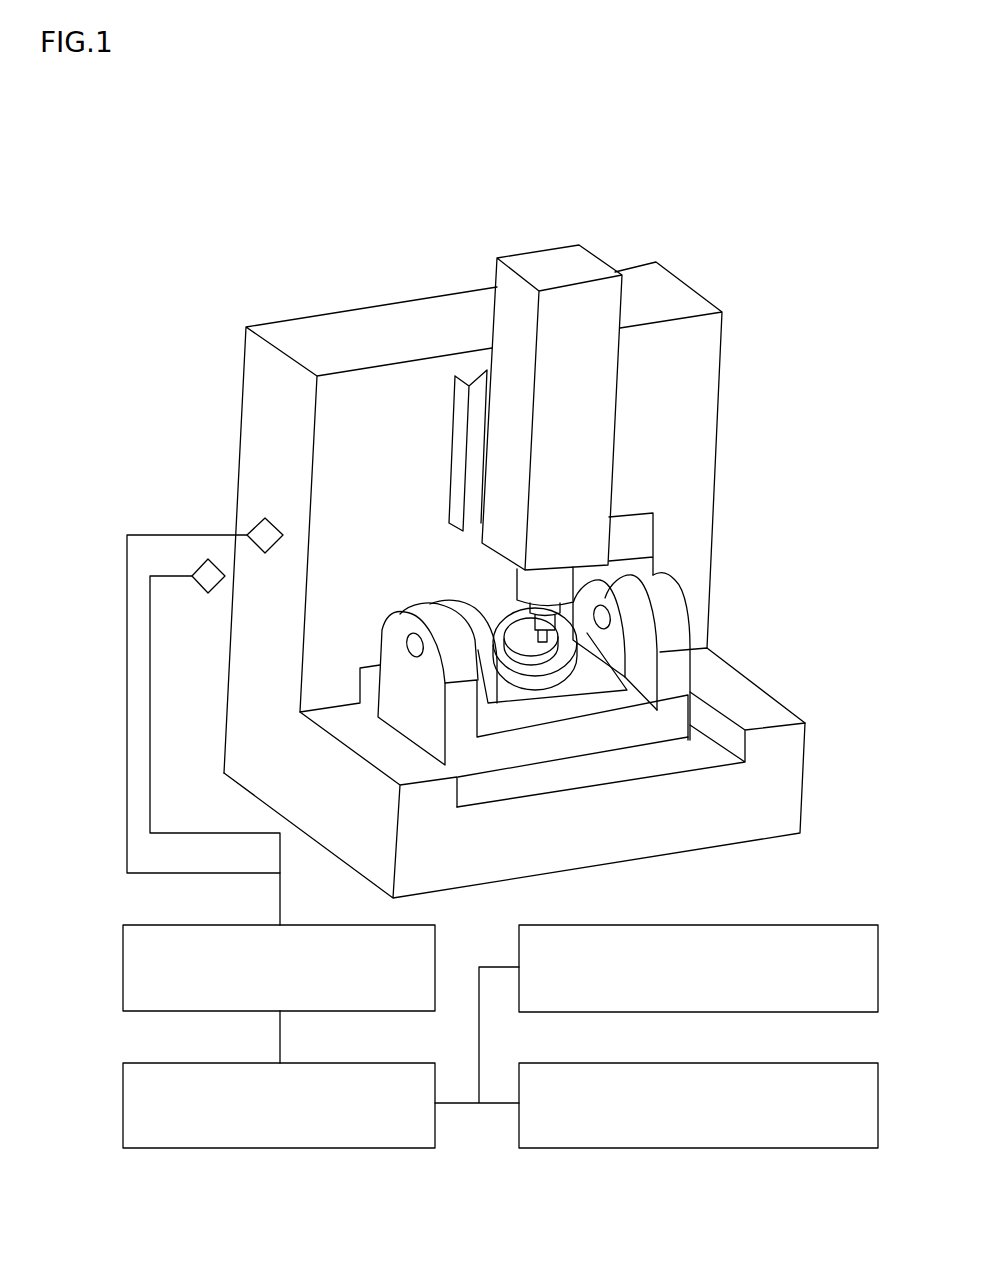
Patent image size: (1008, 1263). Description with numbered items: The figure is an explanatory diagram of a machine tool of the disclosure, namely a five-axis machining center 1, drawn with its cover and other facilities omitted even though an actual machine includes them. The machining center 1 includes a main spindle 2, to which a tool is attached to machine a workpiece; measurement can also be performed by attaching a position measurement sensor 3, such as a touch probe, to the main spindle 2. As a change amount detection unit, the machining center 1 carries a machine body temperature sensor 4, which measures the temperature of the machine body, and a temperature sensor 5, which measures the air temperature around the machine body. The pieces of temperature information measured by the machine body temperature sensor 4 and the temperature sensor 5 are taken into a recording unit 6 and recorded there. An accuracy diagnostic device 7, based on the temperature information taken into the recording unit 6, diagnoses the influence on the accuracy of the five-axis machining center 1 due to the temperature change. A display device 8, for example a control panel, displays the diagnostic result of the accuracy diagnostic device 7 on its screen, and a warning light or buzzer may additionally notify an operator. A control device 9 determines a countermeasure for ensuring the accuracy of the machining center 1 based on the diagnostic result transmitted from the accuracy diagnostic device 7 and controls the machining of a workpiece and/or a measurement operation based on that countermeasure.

The five-axis machining center 1 is at (253, 383).
The main spindle 2 is at (557, 585).
The position measurement sensor 3 is at (557, 613).
The machine body temperature sensor 4 is at (247, 530).
The temperature sensor 5 is at (197, 573).
The recording unit 6 is at (123, 968).
The accuracy diagnostic device 7 is at (123, 1103).
The display device 8 is at (850, 925).
The control device 9 is at (850, 1148).